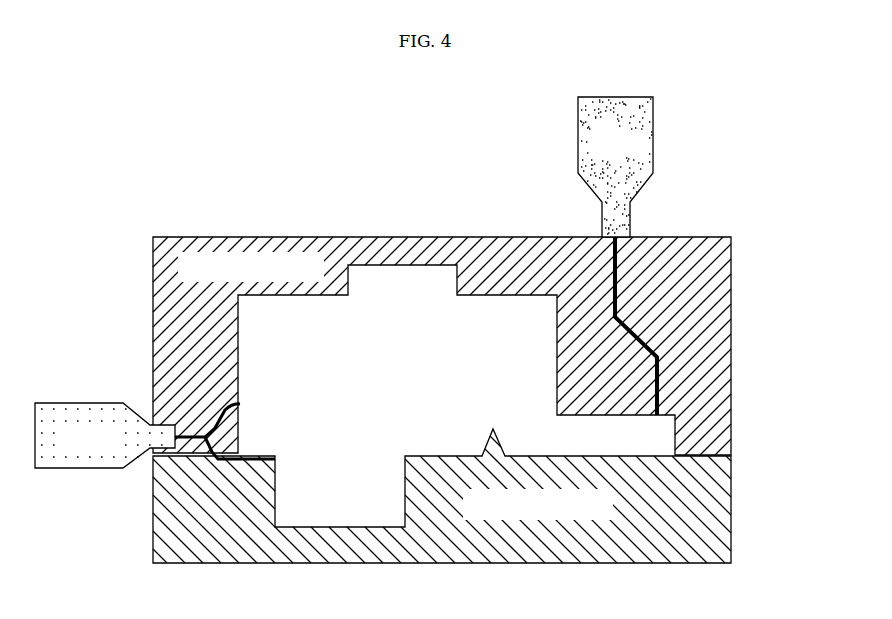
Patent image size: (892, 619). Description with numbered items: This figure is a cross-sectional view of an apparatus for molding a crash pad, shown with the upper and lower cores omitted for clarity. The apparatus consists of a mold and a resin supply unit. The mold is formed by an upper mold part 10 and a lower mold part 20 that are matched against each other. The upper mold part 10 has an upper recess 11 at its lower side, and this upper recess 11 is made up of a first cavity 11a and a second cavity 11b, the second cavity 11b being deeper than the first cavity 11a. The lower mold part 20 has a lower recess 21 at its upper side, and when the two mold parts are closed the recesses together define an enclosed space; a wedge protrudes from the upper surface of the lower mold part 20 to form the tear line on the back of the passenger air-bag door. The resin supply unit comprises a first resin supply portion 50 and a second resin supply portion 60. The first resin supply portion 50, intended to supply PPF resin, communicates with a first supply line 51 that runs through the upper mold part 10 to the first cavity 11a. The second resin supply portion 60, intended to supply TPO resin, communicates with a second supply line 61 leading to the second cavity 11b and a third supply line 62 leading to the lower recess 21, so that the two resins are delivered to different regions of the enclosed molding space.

The upper mold part 10 is at (703, 283).
The upper recess 11 is at (473, 332).
The first cavity 11a is at (650, 433).
The second cavity 11b is at (393, 325).
The lower mold part 20 is at (697, 516).
The lower recess 21 is at (332, 496).
The first resin supply portion 50 is at (643, 113).
The first supply line 51 is at (660, 353).
The second resin supply portion 60 is at (92, 463).
The second supply line 61 is at (217, 422).
The third supply line 62 is at (223, 463).